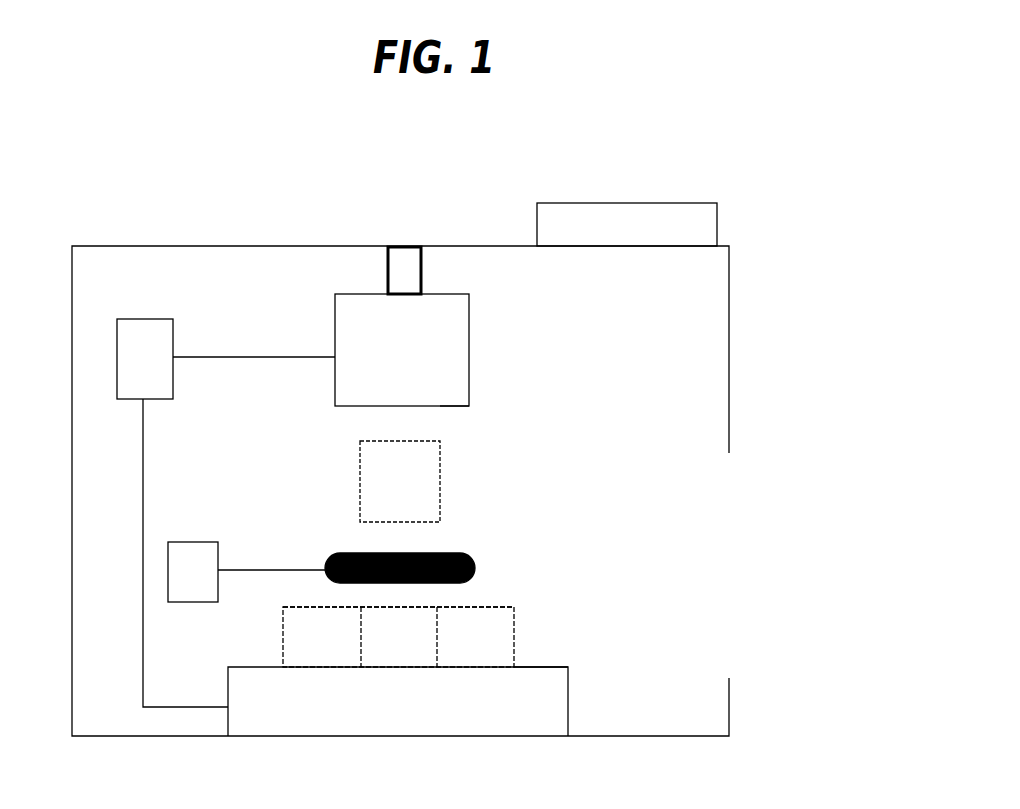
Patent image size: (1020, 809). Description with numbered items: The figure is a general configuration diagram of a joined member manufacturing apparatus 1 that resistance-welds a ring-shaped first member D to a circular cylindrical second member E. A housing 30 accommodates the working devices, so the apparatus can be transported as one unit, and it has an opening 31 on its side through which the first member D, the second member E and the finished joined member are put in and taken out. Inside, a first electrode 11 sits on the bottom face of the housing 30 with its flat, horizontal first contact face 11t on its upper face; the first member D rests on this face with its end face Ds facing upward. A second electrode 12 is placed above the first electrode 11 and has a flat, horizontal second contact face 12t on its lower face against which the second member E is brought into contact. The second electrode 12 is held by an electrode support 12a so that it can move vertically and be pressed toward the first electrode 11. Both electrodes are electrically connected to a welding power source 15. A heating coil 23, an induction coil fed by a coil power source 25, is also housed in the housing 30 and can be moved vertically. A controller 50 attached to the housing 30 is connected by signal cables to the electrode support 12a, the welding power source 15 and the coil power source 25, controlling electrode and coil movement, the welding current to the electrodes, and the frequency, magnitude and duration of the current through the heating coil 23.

The joined member manufacturing apparatus 1 is at (98, 193).
The first electrode 11 is at (568, 712).
The first contact face 11t is at (557, 661).
The second electrode 12 is at (472, 360).
The electrode support 12a is at (432, 270).
The second contact face 12t is at (458, 409).
The welding power source 15 is at (158, 319).
The heating coil 23 is at (475, 562).
The coil power source 25 is at (183, 541).
The housing 30 is at (729, 398).
The opening 31 is at (733, 532).
The controller 50 is at (665, 202).
The second member E is at (440, 492).
The first member D is at (515, 634).
The end face Ds is at (488, 606).